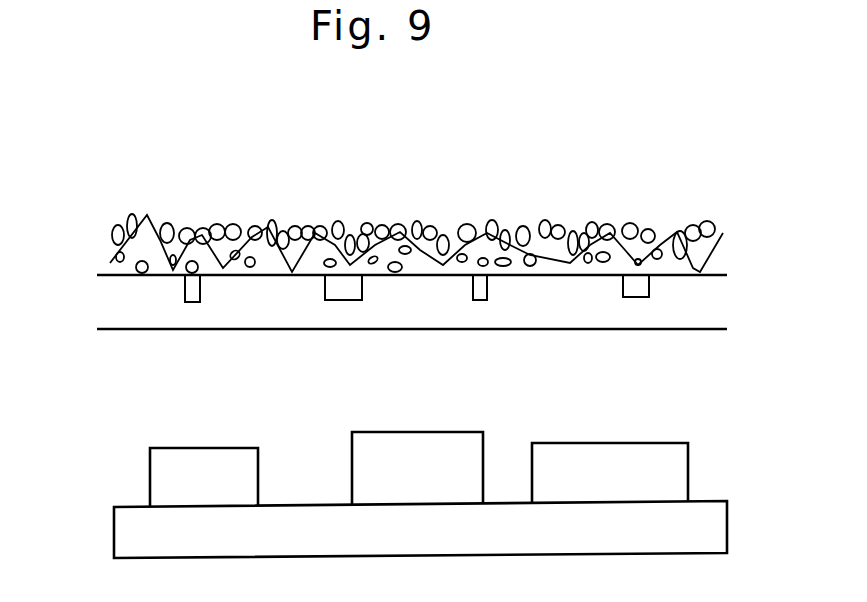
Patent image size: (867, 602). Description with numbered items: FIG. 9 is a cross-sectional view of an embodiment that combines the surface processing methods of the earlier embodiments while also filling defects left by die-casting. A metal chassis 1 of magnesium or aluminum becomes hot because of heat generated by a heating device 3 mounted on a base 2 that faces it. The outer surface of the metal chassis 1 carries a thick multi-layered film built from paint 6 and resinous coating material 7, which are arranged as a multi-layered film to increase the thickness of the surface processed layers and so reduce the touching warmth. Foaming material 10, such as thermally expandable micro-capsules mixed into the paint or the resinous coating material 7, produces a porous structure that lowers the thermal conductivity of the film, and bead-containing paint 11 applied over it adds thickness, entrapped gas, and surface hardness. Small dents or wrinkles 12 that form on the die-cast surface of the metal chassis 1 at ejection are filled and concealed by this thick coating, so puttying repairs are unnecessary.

The metal chassis 1 is at (105, 308).
The base 2 is at (127, 543).
The heating device 3 is at (205, 447).
The paint 6 is at (413, 208).
The resinous coating material 7 is at (142, 240).
The foaming material 10 is at (660, 250).
The bead-containing paint 11 is at (283, 237).
The dents or wrinkles 12 is at (480, 290).